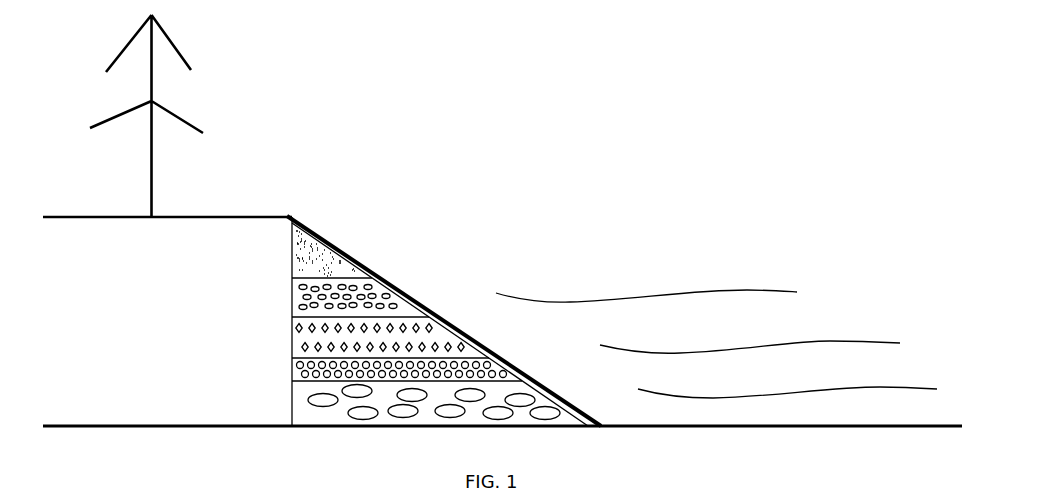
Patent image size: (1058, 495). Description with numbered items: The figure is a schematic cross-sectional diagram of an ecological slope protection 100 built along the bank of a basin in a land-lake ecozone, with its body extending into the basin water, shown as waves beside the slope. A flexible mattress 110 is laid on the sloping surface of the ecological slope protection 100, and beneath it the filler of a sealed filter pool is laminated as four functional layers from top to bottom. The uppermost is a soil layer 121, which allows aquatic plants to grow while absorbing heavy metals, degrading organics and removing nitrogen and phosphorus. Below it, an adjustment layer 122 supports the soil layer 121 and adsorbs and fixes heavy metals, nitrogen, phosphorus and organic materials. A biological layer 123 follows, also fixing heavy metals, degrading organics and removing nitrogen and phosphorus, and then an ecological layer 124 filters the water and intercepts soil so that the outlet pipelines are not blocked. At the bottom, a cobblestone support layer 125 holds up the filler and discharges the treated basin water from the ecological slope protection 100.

The ecological slope protection 100 is at (421, 287).
The flexible mattress 110 is at (323, 224).
The soil layer 121 is at (305, 261).
The adjustment layer 122 is at (297, 295).
The biological layer 123 is at (297, 339).
The ecological layer 124 is at (297, 366).
The support layer 125 is at (300, 402).